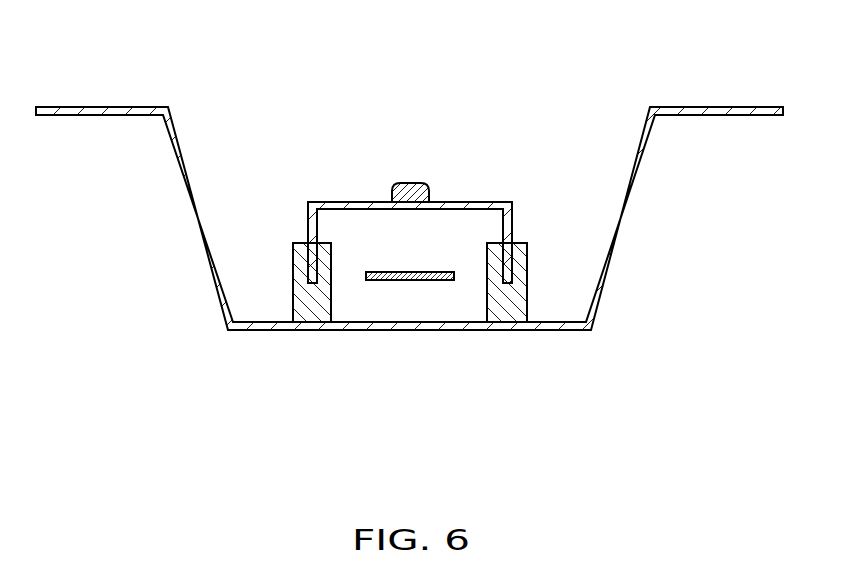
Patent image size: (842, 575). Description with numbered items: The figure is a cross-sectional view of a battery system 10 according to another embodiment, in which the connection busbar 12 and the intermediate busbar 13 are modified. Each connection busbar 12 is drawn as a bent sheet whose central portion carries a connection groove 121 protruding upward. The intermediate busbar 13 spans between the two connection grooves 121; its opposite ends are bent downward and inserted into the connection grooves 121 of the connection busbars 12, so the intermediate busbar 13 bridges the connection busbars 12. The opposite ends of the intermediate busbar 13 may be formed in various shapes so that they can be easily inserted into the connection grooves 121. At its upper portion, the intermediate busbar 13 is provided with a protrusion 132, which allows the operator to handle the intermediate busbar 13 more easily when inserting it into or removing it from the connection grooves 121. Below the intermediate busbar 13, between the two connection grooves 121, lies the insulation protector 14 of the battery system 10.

The battery system 10 is at (752, 46).
The connection busbar 12 is at (107, 108).
The connection groove 121 is at (317, 307).
The intermediate busbar 13 is at (450, 202).
The protrusion 132 is at (408, 183).
The insulation protector 14 is at (423, 280).